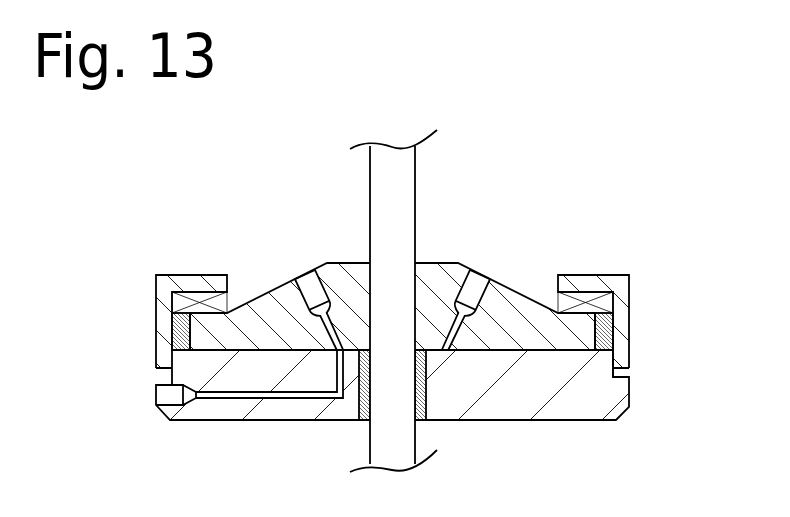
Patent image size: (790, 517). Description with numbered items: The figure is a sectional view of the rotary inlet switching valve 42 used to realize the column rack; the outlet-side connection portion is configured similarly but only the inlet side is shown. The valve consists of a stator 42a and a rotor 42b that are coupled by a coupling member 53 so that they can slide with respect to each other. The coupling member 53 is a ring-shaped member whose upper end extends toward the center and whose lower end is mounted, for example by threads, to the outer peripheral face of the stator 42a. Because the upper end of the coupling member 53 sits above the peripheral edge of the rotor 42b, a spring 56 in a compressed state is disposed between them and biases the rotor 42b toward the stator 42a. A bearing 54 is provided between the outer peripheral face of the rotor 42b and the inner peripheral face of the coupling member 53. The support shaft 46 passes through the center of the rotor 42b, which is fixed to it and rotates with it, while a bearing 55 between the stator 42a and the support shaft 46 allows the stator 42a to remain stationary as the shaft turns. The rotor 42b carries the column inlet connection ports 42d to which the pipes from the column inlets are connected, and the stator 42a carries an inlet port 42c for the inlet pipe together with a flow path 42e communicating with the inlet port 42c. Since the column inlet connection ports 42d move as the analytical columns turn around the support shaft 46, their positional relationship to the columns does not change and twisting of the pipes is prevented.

The inlet switching valve 42 is at (603, 250).
The stator 42a is at (615, 392).
The rotor 42b is at (583, 332).
The inlet port 42c is at (167, 395).
The column inlet connection ports 42d is at (307, 283).
The flow path 42e is at (258, 397).
The support shaft 46 is at (403, 200).
The coupling member 53 is at (630, 278).
The bearing 54 is at (605, 328).
The bearing 55 is at (434, 405).
The spring 56 is at (600, 300).